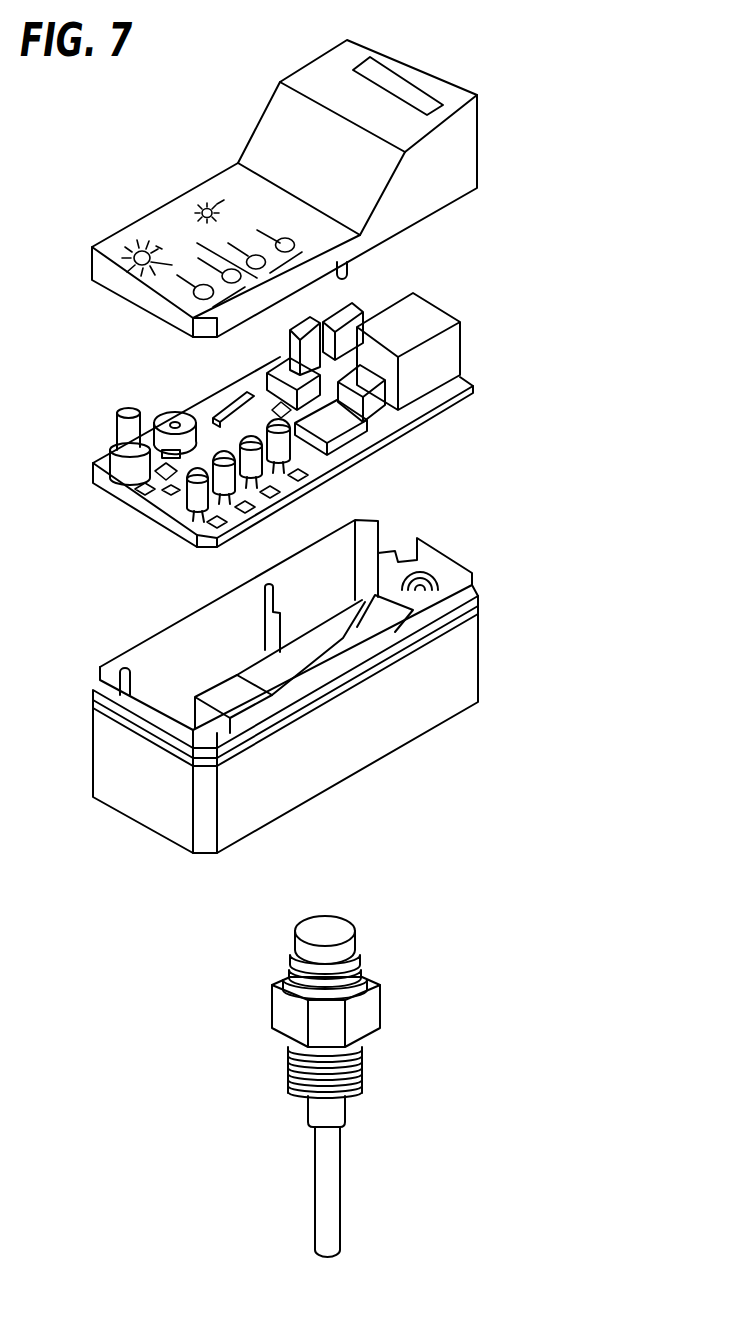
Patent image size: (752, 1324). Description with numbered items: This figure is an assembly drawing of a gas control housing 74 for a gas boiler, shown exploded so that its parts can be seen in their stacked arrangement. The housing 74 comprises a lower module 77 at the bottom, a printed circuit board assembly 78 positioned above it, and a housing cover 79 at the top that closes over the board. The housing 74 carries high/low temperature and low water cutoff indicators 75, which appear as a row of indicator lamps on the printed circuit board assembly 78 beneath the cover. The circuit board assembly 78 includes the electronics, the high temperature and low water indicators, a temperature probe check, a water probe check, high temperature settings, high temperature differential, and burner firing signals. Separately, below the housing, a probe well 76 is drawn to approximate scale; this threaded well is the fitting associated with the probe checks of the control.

The gas control housing 74 is at (615, 247).
The high/low temperature and low water cutoff indicators 75 is at (240, 517).
The probe well 76 is at (348, 1103).
The lower module 77 is at (478, 655).
The printed circuit board assembly 78 is at (460, 355).
The housing cover 79 is at (477, 143).